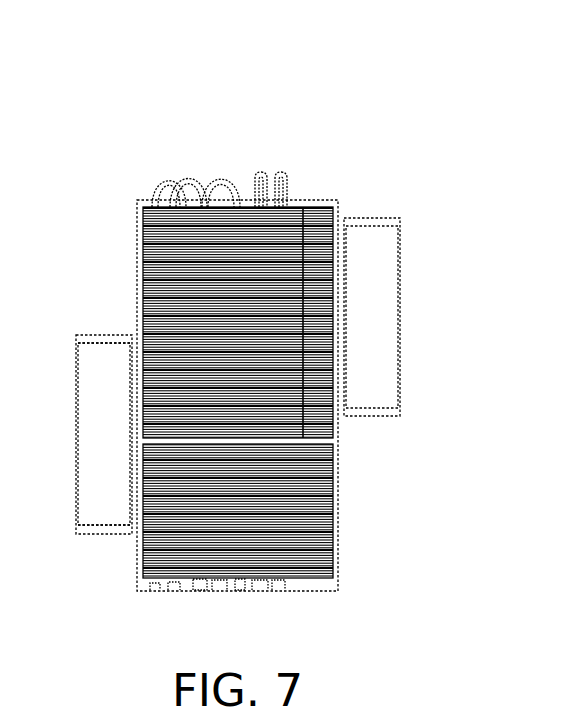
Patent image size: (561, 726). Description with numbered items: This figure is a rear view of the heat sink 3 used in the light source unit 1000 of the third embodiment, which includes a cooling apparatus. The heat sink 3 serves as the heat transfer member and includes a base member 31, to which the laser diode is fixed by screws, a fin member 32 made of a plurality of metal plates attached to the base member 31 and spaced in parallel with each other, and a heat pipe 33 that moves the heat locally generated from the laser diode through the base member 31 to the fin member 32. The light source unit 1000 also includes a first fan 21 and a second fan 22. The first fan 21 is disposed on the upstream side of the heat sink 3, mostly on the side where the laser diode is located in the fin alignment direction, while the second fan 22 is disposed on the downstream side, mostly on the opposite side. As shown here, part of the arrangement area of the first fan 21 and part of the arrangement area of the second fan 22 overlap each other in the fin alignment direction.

The light source unit 1000 is at (139, 101).
The heat sink 3 is at (386, 112).
The first fan 21 is at (110, 338).
The second fan 22 is at (376, 218).
The base member 31 is at (337, 202).
The fin member 32 is at (302, 208).
The heat pipe 33 is at (203, 173).